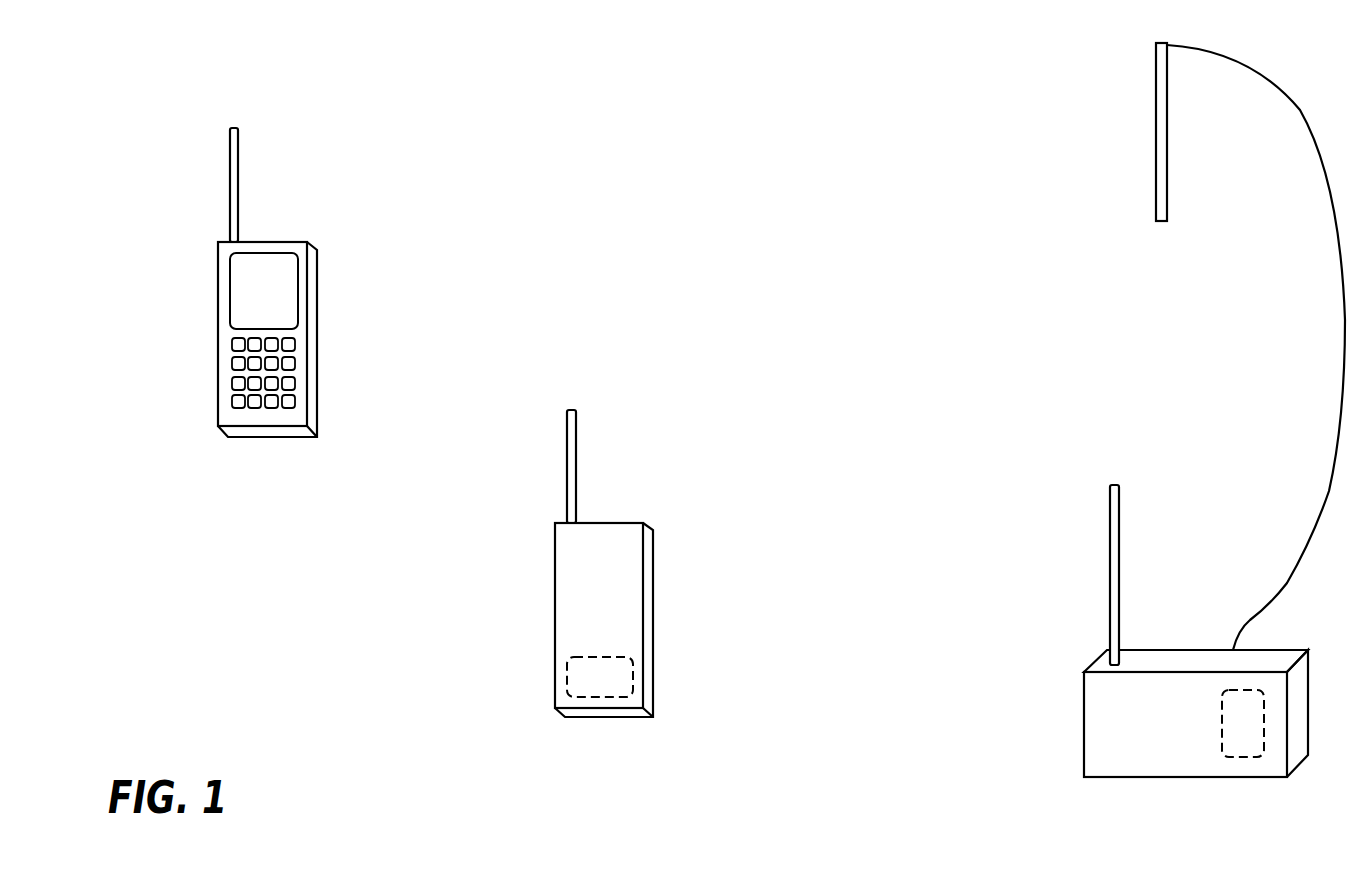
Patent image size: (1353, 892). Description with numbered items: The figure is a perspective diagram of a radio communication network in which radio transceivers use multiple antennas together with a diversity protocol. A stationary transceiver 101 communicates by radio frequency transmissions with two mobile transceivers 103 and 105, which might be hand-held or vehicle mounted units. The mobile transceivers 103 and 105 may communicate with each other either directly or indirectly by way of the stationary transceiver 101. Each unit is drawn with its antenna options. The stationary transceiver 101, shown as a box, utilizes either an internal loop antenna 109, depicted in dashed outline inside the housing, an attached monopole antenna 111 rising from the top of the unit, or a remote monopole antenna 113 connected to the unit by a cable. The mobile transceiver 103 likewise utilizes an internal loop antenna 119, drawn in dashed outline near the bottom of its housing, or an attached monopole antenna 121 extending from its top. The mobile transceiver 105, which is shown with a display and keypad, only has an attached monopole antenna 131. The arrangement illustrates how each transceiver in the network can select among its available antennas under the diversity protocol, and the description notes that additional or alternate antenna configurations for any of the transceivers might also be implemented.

The stationary transceiver 101 is at (1192, 650).
The mobile transceiver 103 is at (633, 522).
The mobile transceiver 105 is at (298, 241).
The internal loop antenna 109 is at (1237, 758).
The attached monopole antenna 111 is at (1110, 525).
The remote monopole antenna 113 is at (1156, 156).
The internal loop antenna 119 is at (567, 672).
The attached monopole antenna 121 is at (567, 450).
The attached monopole antenna 131 is at (230, 170).